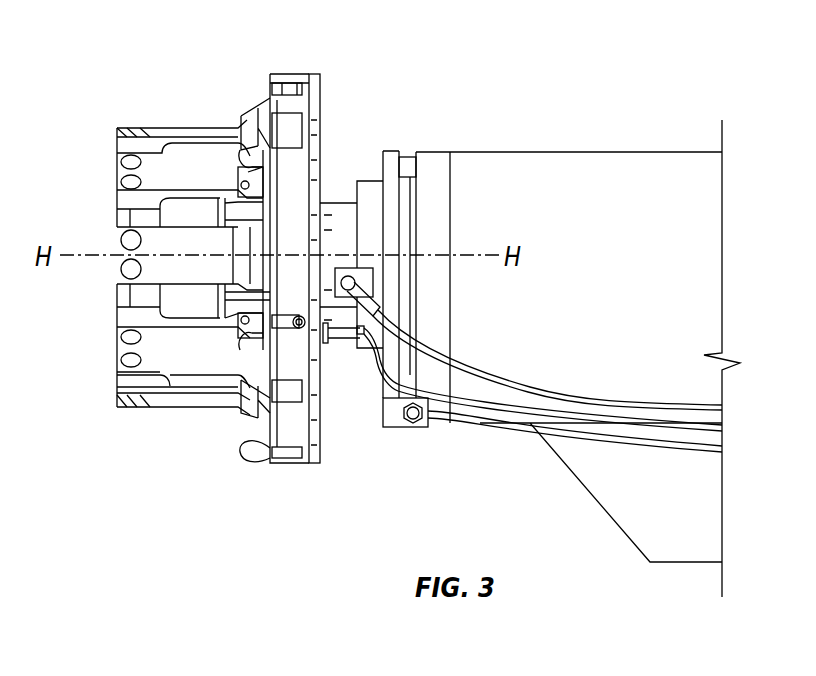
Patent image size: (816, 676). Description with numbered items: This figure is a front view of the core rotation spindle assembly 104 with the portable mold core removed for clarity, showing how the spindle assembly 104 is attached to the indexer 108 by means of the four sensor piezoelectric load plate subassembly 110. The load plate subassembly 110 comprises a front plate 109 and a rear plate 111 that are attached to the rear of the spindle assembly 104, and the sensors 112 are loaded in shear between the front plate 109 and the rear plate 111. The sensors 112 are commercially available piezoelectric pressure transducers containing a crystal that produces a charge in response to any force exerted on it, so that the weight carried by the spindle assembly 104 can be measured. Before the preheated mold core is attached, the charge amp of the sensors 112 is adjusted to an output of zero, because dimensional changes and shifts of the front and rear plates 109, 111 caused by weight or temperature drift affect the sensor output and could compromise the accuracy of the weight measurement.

The spindle assembly 104 is at (280, 65).
The indexer 108 is at (681, 213).
The front plate 109 is at (383, 165).
The four sensor piezoelectric load plate subassembly 110 is at (432, 121).
The rear plate 111 is at (447, 152).
The sensors 112 is at (410, 157).